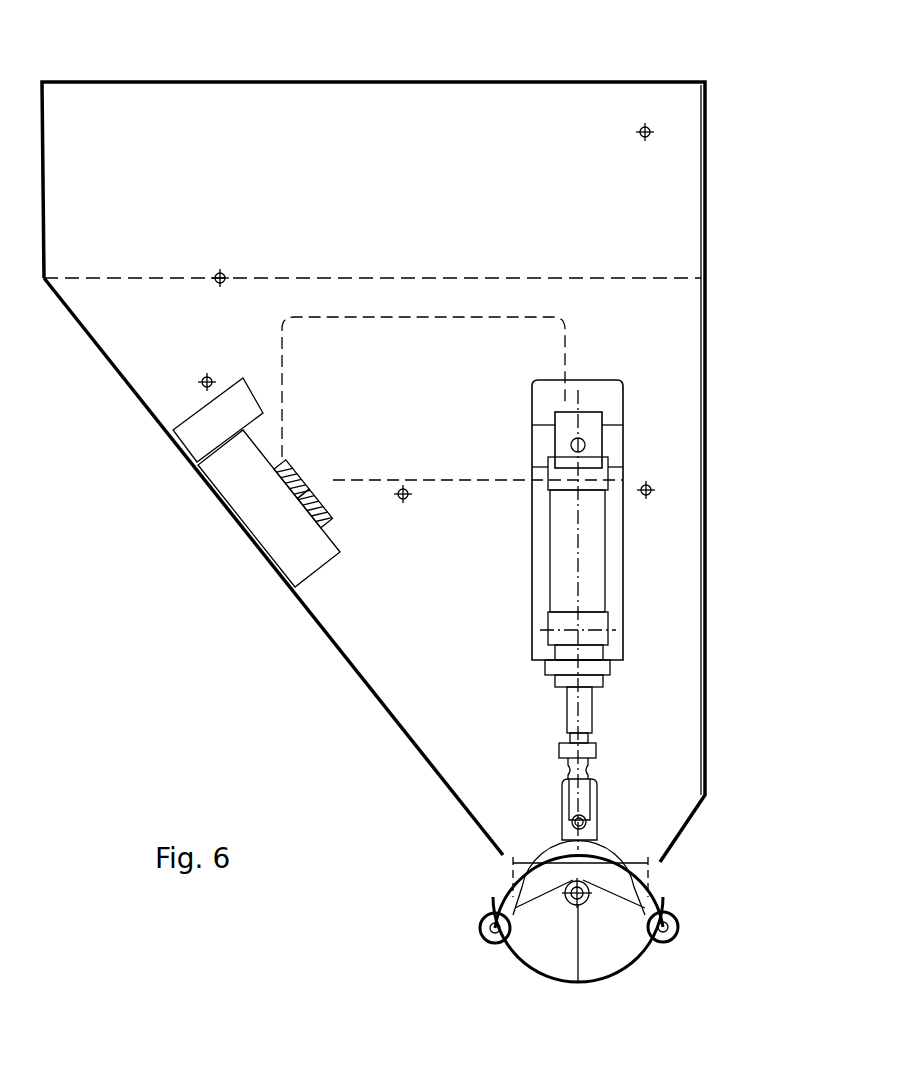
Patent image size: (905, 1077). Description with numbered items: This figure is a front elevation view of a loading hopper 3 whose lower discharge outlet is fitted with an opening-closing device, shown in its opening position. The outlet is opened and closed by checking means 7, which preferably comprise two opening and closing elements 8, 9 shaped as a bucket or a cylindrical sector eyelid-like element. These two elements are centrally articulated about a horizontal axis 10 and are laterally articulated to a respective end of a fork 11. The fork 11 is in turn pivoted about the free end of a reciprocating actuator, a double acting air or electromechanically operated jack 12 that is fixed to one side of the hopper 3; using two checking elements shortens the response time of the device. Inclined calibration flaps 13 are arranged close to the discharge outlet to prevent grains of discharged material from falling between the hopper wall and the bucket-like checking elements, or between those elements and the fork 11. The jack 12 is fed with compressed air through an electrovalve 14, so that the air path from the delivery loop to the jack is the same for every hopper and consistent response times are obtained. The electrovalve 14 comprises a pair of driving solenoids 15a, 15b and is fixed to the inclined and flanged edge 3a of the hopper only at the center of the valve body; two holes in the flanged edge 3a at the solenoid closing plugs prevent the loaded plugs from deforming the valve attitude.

The loading hopper 3 is at (530, 98).
The inclined and flanged edge 3a is at (332, 645).
The checking means 7 is at (608, 748).
The opening and closing element 8 is at (528, 937).
The opening and closing element 9 is at (612, 955).
The horizontal axis 10 is at (568, 908).
The fork 11 is at (500, 873).
The jack 12 is at (598, 590).
The inclined calibration flap 13 is at (623, 887).
The electrovalve 14 is at (230, 472).
The driving solenoid 15a is at (307, 463).
The driving solenoid 15b is at (333, 500).